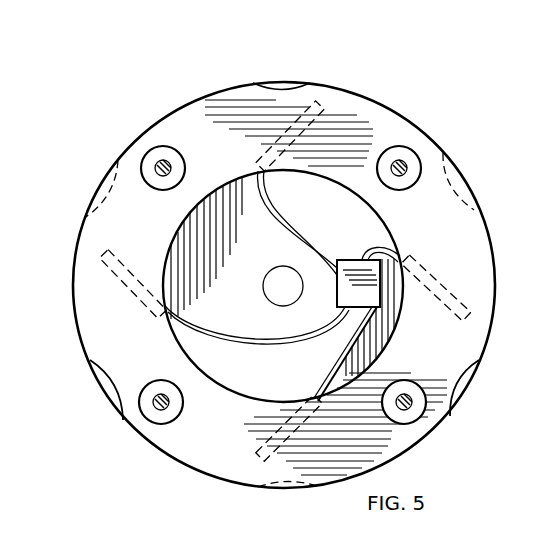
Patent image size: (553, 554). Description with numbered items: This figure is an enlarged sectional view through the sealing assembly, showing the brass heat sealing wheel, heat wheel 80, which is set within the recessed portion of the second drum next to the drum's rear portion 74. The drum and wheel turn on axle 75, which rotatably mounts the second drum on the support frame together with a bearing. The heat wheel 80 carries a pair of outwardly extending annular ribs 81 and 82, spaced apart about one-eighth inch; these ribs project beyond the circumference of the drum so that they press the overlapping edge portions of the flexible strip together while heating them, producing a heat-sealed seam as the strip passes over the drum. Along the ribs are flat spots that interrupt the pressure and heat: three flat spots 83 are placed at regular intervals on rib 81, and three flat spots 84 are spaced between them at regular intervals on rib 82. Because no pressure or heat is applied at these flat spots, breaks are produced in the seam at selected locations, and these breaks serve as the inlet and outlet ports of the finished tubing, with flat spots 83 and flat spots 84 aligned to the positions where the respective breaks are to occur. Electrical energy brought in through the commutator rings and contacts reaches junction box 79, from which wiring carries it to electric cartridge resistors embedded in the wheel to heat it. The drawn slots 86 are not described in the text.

The rear portion 74 is at (197, 240).
The axle 75 is at (277, 295).
The junction box 79 is at (345, 288).
The heat wheel 80 is at (468, 109).
The annular rib 81 is at (495, 262).
The annular rib 82 is at (268, 81).
The flat spots 83 is at (298, 83).
The flat spots 84 is at (110, 187).
The slots 86 is at (326, 108).